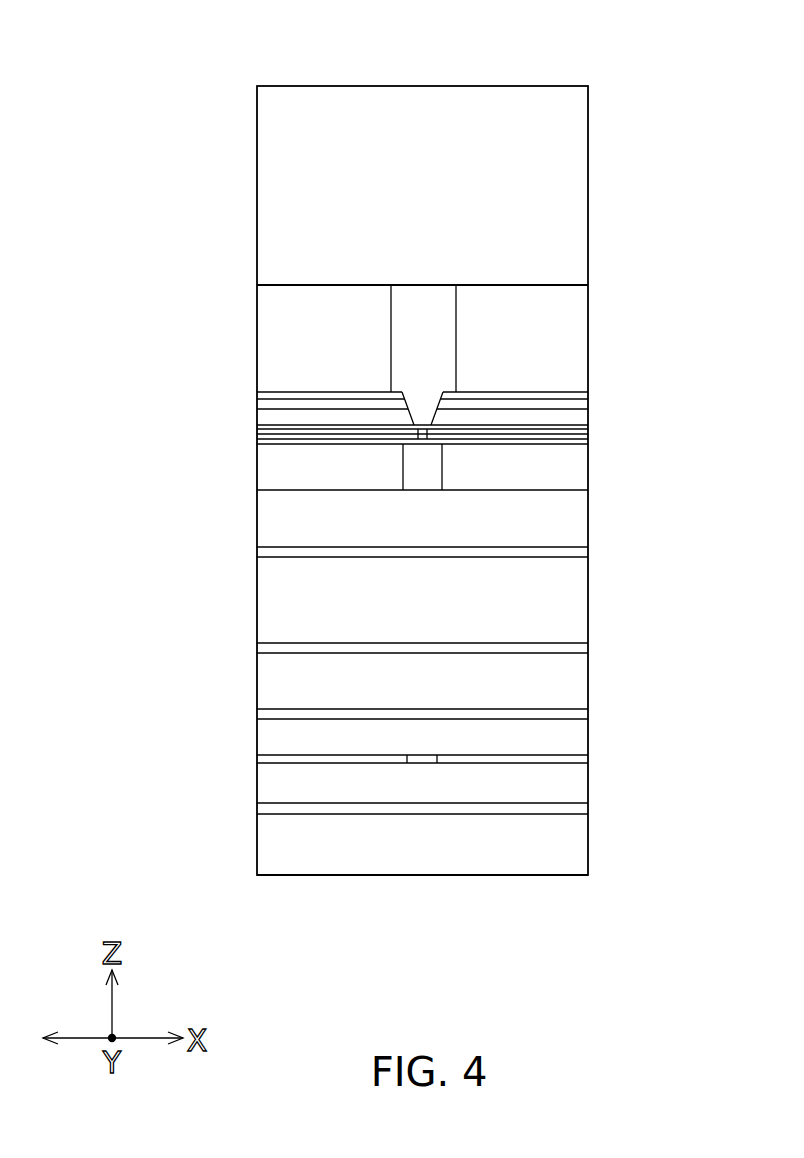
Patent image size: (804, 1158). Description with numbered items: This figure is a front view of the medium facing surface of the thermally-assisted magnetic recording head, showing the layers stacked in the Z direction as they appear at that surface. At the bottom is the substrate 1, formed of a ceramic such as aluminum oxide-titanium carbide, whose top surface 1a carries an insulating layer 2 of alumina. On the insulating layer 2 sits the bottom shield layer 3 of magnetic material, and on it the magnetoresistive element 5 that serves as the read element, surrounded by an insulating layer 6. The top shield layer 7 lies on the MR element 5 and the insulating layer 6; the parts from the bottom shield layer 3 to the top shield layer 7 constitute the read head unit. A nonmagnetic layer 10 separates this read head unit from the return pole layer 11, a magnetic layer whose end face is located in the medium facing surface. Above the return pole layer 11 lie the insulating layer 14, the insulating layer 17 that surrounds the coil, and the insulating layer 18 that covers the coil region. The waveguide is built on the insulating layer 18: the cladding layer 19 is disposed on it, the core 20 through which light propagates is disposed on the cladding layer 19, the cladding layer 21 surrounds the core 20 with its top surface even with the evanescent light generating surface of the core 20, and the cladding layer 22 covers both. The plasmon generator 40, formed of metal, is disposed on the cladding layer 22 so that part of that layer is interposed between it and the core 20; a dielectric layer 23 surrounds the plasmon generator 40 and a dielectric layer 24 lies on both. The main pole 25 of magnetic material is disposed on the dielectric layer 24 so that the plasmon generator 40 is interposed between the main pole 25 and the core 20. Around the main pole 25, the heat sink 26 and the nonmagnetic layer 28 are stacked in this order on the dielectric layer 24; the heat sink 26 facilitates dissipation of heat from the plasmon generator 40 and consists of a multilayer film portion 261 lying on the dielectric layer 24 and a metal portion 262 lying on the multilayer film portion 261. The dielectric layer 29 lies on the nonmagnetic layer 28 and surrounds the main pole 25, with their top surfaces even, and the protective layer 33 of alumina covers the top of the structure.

The substrate 1 is at (587, 847).
The top surface 1a is at (272, 814).
The insulating layer 2 is at (587, 810).
The bottom shield layer 3 is at (587, 788).
The magnetoresistive (MR) element 5 is at (418, 763).
The insulating layer 6 is at (587, 758).
The top shield layer 7 is at (582, 733).
The nonmagnetic layer 10 is at (588, 717).
The return pole layer 11 is at (582, 673).
The insulating layer 14 is at (588, 650).
The insulating layer 17 is at (582, 605).
The insulating layer 18 is at (588, 552).
The cladding layer 19 is at (582, 520).
The core 20 is at (413, 480).
The cladding layer 21 is at (582, 473).
The cladding layer 22 is at (257, 440).
The dielectric layer 23 is at (588, 435).
The dielectric layer 24 is at (257, 427).
The main pole 25 is at (445, 297).
The heat sink 26 is at (136, 353).
The multilayer film portion 261 is at (257, 416).
The metal portion 262 is at (257, 403).
The nonmagnetic layer 28 is at (588, 397).
The dielectric layer 29 is at (588, 342).
The protective layer 33 is at (589, 135).
The plasmon generator 40 is at (423, 437).